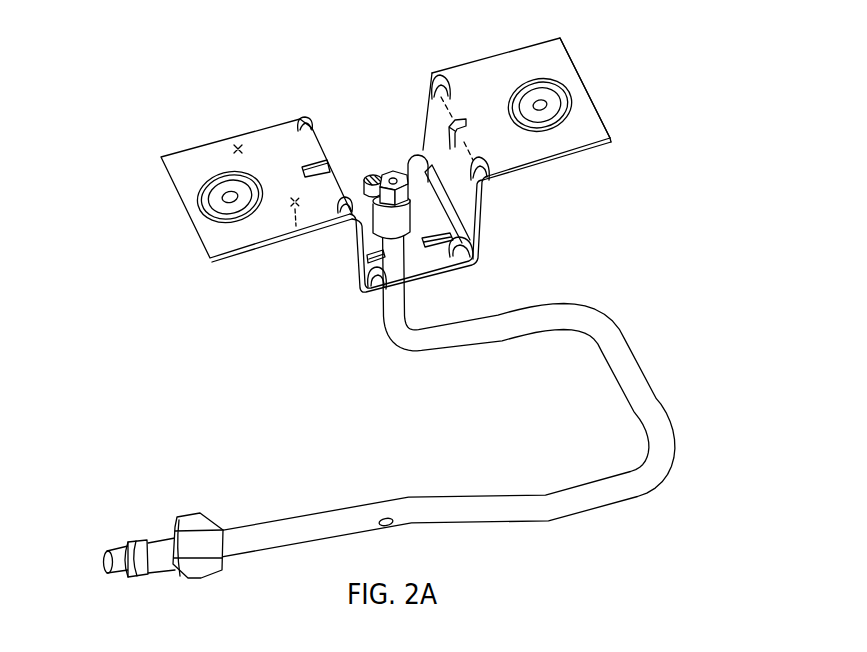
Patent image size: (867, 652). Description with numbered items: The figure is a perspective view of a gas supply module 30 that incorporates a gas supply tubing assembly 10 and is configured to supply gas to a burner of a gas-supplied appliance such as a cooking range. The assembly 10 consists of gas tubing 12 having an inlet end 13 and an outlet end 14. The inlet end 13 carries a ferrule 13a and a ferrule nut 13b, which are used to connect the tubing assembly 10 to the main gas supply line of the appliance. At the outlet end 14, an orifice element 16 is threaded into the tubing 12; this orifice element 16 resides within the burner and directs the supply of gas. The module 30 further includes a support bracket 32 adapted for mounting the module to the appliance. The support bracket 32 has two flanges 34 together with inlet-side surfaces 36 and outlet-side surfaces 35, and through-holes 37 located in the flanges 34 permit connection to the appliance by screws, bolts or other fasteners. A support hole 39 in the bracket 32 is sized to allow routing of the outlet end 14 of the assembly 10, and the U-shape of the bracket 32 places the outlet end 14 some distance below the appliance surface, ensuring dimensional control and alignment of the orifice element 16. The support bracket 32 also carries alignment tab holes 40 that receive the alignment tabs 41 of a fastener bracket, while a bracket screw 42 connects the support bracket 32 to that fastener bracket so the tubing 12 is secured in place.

The gas supply tubing assembly 10 is at (478, 394).
The gas tubing 12 is at (630, 367).
The inlet end 13 is at (107, 552).
The ferrule 13a is at (128, 538).
The ferrule nut 13b is at (205, 518).
The outlet end 14 is at (396, 229).
The orifice element 16 is at (396, 180).
The gas supply module 30 is at (420, 184).
The support bracket 32 is at (566, 50).
The flanges 34 is at (602, 118).
The outlet-side surfaces 35 is at (236, 148).
The inlet-side surfaces 36 is at (296, 229).
The through-holes 37 is at (543, 104).
The support hole 39 is at (373, 181).
The alignment tab holes 40 is at (432, 233).
The alignment tabs 41 is at (467, 262).
The bracket screw 42 is at (372, 177).